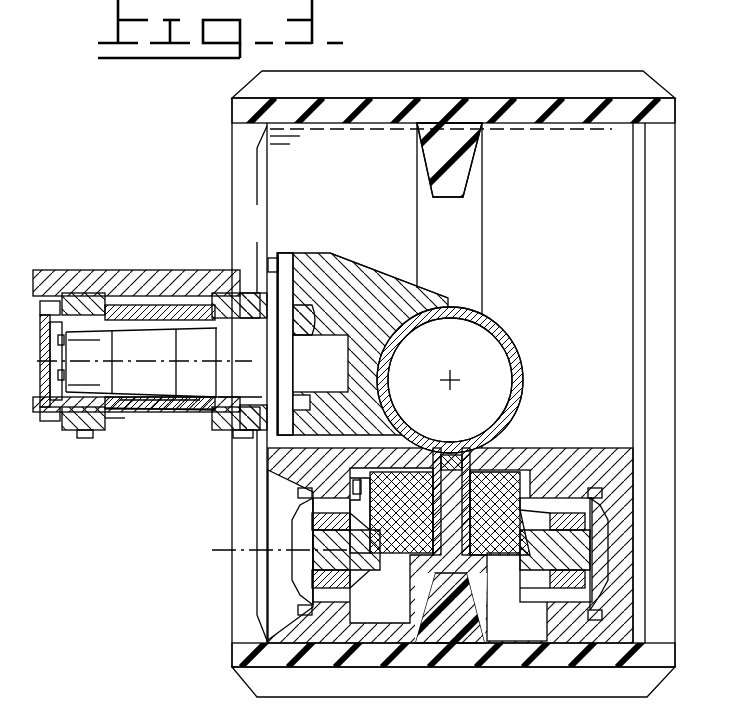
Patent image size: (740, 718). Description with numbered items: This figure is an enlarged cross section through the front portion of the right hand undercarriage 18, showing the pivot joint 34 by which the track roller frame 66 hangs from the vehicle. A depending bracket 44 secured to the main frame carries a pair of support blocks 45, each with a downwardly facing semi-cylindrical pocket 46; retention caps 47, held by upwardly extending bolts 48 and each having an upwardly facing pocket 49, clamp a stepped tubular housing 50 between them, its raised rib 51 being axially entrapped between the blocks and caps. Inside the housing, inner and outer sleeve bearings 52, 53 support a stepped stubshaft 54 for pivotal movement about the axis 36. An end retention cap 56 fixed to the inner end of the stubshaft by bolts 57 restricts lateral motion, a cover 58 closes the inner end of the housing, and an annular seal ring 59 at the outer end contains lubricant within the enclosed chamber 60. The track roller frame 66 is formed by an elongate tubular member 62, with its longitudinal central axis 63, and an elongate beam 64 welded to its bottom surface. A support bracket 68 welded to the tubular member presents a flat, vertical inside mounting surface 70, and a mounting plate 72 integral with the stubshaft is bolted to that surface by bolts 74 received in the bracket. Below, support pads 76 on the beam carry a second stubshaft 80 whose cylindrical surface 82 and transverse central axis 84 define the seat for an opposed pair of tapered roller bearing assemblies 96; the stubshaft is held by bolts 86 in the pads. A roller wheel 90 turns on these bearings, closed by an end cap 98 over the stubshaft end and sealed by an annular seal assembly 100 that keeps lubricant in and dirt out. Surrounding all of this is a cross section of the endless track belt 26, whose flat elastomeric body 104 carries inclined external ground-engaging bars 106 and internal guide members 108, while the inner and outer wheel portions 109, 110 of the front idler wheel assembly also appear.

The right hand track-type undercarriage 18 is at (421, 278).
The ground-engaging track or belt 26 is at (660, 74).
The pivot joint 34 is at (148, 337).
The axis 36 is at (128, 368).
The depending bracket 44 is at (113, 244).
The support blocks 45 is at (90, 272).
The semi-cylindrical internal surface or pocket 46 is at (103, 285).
The retention caps 47 is at (74, 430).
The fasteners or bolts 48 is at (268, 437).
The semi-cylindrical internal surface or pocket 49 is at (110, 432).
The stepped tubular housing 50 is at (155, 296).
The raised rib 51 is at (148, 412).
The inner sleeve bearing 52 is at (90, 338).
The outer sleeve bearing 53 is at (250, 398).
The stubshaft 54 is at (234, 358).
The end retention cap 56 is at (66, 388).
The threaded fasteners or bolts 57 is at (58, 418).
The cover 58 is at (54, 312).
The annular seal ring 59 is at (262, 323).
The enclosed chamber 60 is at (144, 410).
The elongate tubular member 62 is at (488, 325).
The central axis 63 is at (453, 380).
The elongate beam 64 is at (480, 455).
The track roller frame 66 is at (531, 386).
The support bracket 68 is at (352, 265).
The inside mounting surface 70 is at (300, 322).
The mounting plate 72 is at (285, 253).
The threaded fasteners or bolts 74 is at (272, 256).
The support pads 76 is at (394, 546).
The stubshaft 80 is at (320, 560).
The cylindrical surface 82 is at (308, 583).
The transverse central axis 84 is at (214, 550).
The threaded fasteners or bolts 86 is at (380, 488).
The roller wheel 90 is at (570, 456).
The tapered roller bearing assemblies 96 is at (300, 520).
The end cap 98 is at (604, 541).
The annular seal assembly 100 is at (545, 595).
The elastomeric body 104 is at (672, 114).
The ground-engaging bars 106 is at (540, 78).
The internal guide members 108 is at (470, 166).
The inner wheel portion 109 is at (305, 165).
The outer wheel portion 110 is at (532, 235).